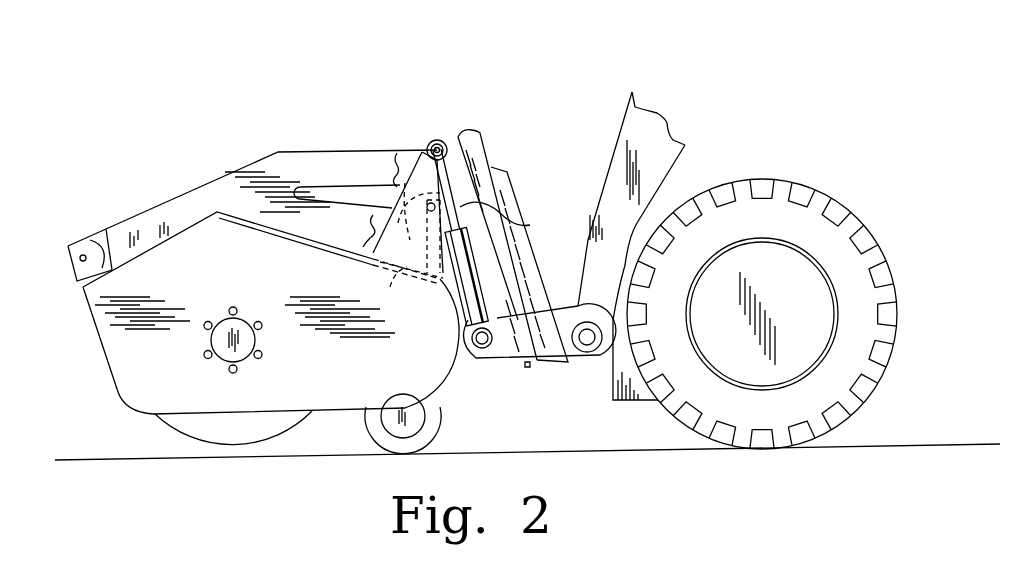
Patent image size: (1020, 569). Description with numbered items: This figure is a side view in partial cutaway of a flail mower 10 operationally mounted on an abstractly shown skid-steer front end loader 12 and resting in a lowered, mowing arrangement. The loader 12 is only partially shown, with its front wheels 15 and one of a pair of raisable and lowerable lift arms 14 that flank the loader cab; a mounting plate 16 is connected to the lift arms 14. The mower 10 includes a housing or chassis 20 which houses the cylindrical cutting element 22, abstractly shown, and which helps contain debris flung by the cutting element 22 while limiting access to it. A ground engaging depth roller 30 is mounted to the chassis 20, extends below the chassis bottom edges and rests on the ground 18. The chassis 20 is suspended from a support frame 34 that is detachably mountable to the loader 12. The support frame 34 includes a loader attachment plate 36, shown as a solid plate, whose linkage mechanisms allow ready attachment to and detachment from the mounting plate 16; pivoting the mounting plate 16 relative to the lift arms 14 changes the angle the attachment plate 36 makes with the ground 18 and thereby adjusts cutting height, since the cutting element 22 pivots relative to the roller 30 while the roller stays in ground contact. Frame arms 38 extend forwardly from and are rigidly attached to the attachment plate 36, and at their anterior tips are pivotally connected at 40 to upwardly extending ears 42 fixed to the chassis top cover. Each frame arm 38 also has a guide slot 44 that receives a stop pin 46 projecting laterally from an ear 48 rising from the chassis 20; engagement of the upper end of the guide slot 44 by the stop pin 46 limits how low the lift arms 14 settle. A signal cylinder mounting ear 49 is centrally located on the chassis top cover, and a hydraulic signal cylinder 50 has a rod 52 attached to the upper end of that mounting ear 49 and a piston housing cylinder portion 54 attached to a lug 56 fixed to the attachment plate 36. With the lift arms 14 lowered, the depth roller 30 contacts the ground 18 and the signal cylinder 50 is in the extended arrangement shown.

The mower 10 is at (117, 138).
The skid-steer front end loader 12 is at (663, 90).
The lift arms 14 is at (616, 178).
The front wheels 15 is at (838, 235).
The mounting plate 16 is at (510, 195).
The ground 18 is at (95, 462).
The housing or chassis 20 is at (90, 374).
The cylindrical cutting element 22 is at (233, 432).
The ground engaging depth roller 30 is at (413, 423).
The support frame 34 is at (228, 150).
The loader attachment plate 36 is at (470, 135).
The frame arms 38 is at (190, 205).
The pivotal connection 40 is at (80, 252).
The upwardly extending ears 42 is at (100, 262).
The guide slot 44 is at (424, 275).
The stop pin 46 is at (412, 180).
The ear 48 is at (402, 270).
The signal cylinder mounting ear 49 is at (435, 143).
The hydraulic signal cylinder 50 is at (480, 271).
The rod 52 is at (500, 232).
The piston housing cylinder portion 54 is at (470, 348).
The lug 56 is at (502, 352).